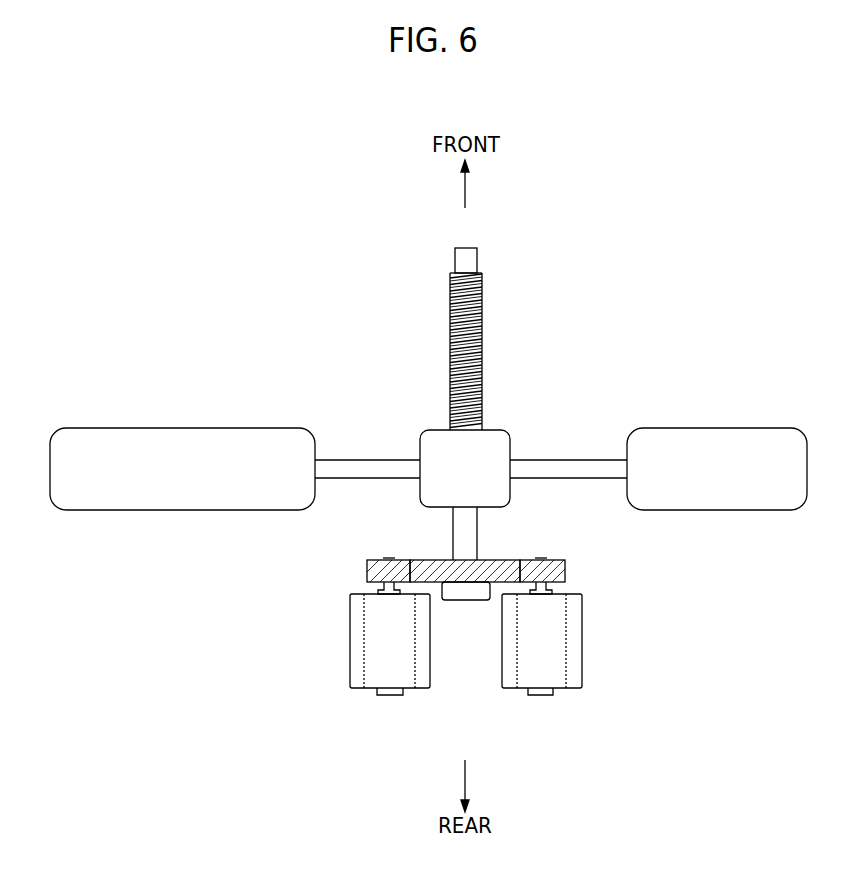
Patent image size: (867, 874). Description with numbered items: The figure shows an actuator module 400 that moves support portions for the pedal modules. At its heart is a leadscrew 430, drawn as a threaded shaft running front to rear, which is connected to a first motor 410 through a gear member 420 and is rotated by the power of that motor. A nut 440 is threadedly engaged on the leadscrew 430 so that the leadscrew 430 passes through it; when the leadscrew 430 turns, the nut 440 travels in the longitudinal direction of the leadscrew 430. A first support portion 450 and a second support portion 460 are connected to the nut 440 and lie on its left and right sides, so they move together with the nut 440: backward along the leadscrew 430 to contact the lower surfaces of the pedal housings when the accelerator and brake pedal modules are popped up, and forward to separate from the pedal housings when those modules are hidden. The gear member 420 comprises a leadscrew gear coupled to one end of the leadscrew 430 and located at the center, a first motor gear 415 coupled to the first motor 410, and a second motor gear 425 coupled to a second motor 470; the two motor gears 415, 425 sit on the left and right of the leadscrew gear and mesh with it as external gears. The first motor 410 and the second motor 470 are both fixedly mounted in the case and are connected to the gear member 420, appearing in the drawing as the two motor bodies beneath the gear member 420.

The actuator module 400 is at (586, 238).
The leadscrew 430 is at (451, 301).
The nut 440 is at (499, 436).
The second support portion 460 is at (125, 445).
The first support portion 450 is at (722, 445).
The gear member 420 is at (486, 573).
The first motor gear 415 is at (566, 572).
The second motor gear 425 is at (368, 572).
The second motor 470 is at (358, 646).
The first motor 410 is at (573, 645).